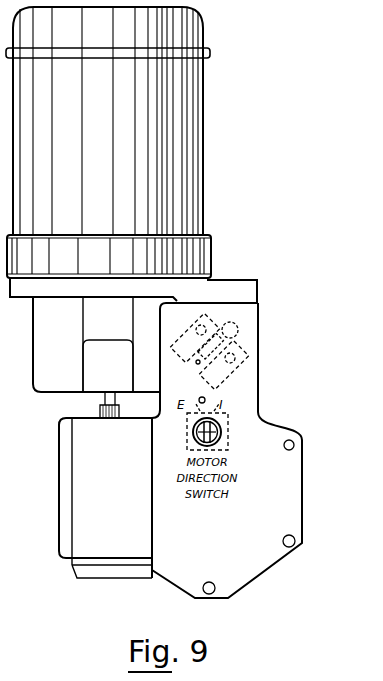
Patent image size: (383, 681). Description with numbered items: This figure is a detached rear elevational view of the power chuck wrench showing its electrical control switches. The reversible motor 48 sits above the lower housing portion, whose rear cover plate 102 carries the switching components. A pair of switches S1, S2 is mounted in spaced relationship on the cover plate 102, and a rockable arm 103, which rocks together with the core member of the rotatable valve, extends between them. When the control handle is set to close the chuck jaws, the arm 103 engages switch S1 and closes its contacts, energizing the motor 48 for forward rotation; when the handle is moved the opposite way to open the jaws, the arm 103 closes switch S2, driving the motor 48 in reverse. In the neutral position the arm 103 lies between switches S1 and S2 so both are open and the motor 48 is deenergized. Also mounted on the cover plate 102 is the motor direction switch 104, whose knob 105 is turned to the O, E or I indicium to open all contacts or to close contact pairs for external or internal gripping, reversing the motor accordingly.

The motor 48 is at (195, 148).
The rear cover plate 102 is at (253, 432).
The rockable arm 103 is at (228, 325).
The motor direction switch 104 is at (228, 440).
The knob 105 is at (187, 437).
The switch S1 is at (194, 337).
The switch S2 is at (223, 364).